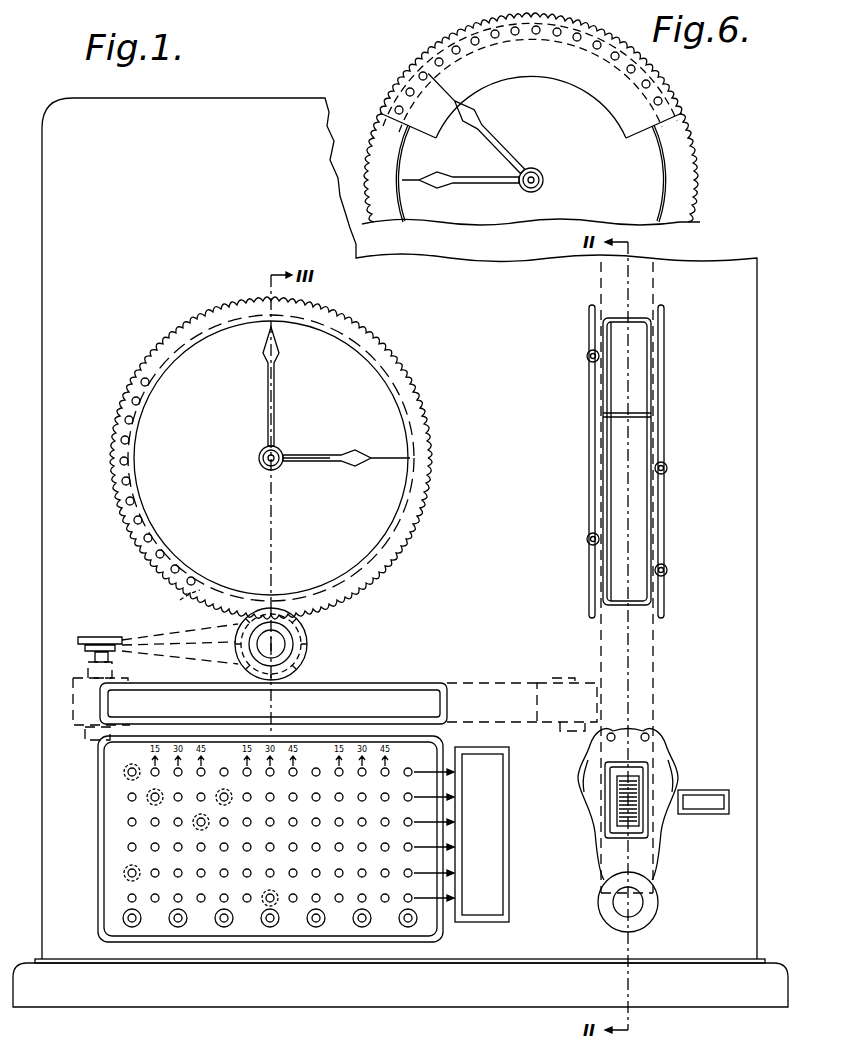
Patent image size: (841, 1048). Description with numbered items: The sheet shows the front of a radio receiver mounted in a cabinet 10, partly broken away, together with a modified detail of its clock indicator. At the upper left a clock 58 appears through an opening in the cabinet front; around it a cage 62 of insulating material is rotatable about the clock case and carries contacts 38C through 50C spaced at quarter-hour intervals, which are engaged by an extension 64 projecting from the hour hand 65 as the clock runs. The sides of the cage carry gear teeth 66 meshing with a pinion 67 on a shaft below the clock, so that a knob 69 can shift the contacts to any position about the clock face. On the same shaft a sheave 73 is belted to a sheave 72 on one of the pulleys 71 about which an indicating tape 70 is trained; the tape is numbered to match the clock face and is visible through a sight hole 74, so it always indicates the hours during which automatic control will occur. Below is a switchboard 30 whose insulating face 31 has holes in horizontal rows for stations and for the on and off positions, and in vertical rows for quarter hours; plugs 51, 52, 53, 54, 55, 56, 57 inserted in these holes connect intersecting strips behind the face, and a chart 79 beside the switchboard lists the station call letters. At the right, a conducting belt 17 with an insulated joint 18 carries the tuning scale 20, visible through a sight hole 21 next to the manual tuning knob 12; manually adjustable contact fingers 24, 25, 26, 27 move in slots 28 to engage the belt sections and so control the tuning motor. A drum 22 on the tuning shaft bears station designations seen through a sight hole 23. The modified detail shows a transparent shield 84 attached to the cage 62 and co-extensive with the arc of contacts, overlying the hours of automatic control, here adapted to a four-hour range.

In FIG. 1, the cabinet 10 is at (56, 280).
In FIG. 1, the knob 12 is at (652, 903).
In FIG. 1, the belt 17 is at (655, 665).
In FIG. 1, the insulated joint 18 is at (626, 416).
In FIG. 1, the tuning scale 20 is at (622, 818).
In FIG. 1, the sight hole 21 is at (646, 776).
In FIG. 1, the drum 22 is at (696, 806).
In FIG. 1, the sight hole 23 is at (725, 811).
In FIG. 1, the contact finger 24 is at (587, 357).
In FIG. 1, the contact finger 25 is at (587, 540).
In FIG. 1, the contact finger 26 is at (667, 469).
In FIG. 1, the contact finger 27 is at (667, 571).
In FIG. 1, the slots 28 is at (589, 506).
In FIG. 1, the switchboard 30 is at (106, 808).
In FIG. 1, the face 31 is at (102, 853).
In FIG. 1, the contact 38C is at (185, 603).
In FIG. 1, the contact 50C is at (140, 381).
In FIG. 1, the plug 51 is at (132, 927).
In FIG. 1, the plug 52 is at (178, 927).
In FIG. 1, the plug 53 is at (224, 927).
In FIG. 1, the plug 54 is at (270, 927).
In FIG. 1, the plug 55 is at (316, 927).
In FIG. 1, the plug 56 is at (362, 927).
In FIG. 1, the plug 57 is at (408, 927).
In FIG. 1, the clock 58 is at (385, 420).
In FIG. 6, the cage 62 is at (678, 130).
In FIG. 1, the extension 64 is at (412, 462).
In FIG. 6, the extension 64 is at (472, 95).
In FIG. 1, the hour hand 65 is at (318, 449).
In FIG. 6, the hour hand 65 is at (500, 150).
In FIG. 1, the gear teeth 66 is at (425, 497).
In FIG. 6, the gear teeth 66 is at (700, 152).
In FIG. 1, the pinion 67 is at (308, 638).
In FIG. 1, the knob 69 is at (286, 650).
In FIG. 1, the indicating tape 70 is at (485, 677).
In FIG. 1, the pulleys 71 is at (82, 735).
In FIG. 1, the sheave 72 is at (95, 637).
In FIG. 1, the sheave 73 is at (300, 623).
In FIG. 1, the sight hole 74 is at (372, 690).
In FIG. 1, the chart 79 is at (503, 788).
In FIG. 6, the shield 84 is at (559, 72).